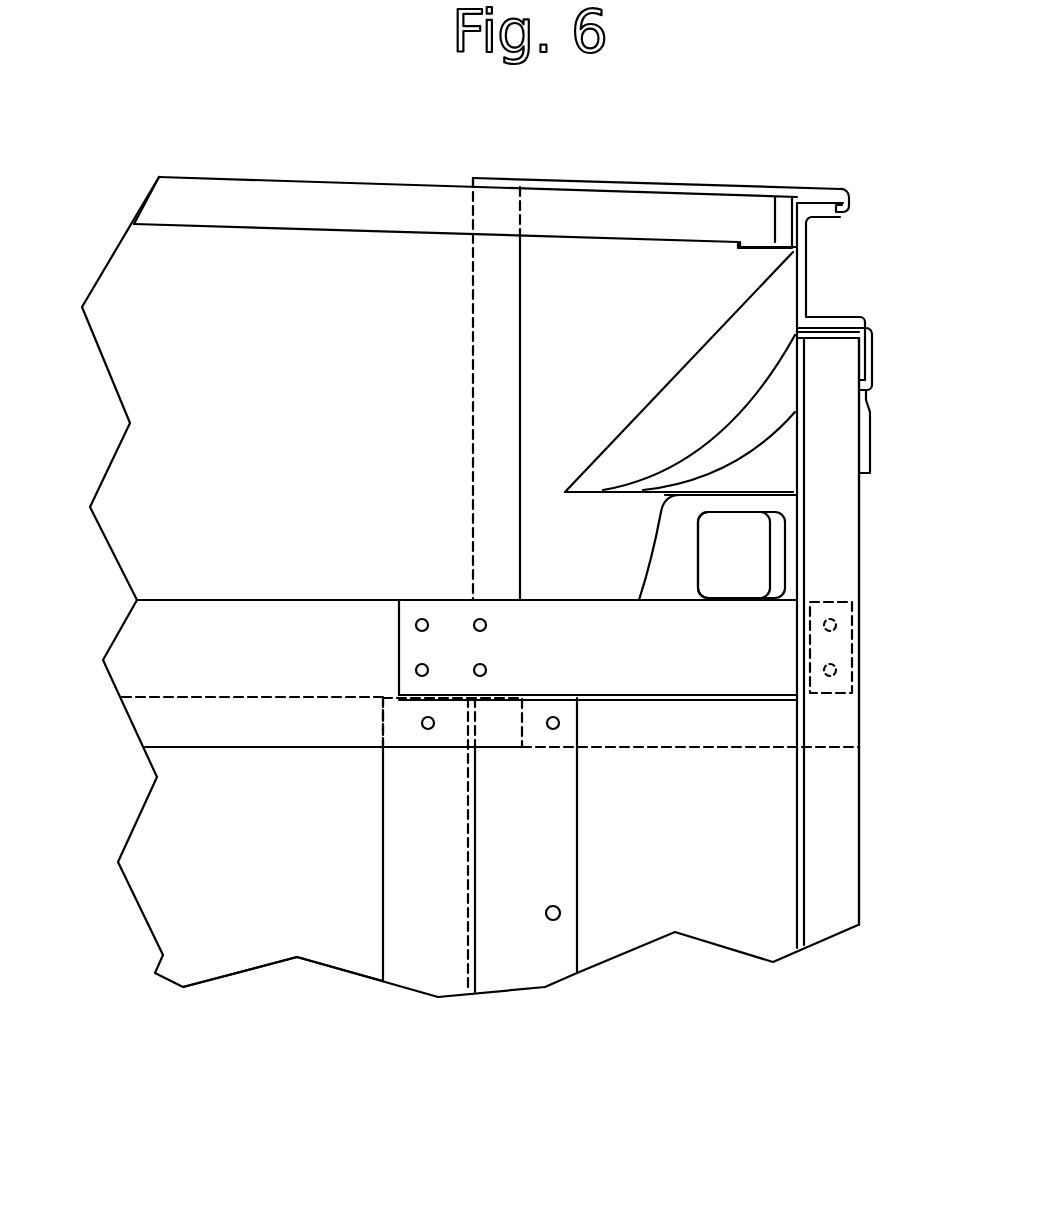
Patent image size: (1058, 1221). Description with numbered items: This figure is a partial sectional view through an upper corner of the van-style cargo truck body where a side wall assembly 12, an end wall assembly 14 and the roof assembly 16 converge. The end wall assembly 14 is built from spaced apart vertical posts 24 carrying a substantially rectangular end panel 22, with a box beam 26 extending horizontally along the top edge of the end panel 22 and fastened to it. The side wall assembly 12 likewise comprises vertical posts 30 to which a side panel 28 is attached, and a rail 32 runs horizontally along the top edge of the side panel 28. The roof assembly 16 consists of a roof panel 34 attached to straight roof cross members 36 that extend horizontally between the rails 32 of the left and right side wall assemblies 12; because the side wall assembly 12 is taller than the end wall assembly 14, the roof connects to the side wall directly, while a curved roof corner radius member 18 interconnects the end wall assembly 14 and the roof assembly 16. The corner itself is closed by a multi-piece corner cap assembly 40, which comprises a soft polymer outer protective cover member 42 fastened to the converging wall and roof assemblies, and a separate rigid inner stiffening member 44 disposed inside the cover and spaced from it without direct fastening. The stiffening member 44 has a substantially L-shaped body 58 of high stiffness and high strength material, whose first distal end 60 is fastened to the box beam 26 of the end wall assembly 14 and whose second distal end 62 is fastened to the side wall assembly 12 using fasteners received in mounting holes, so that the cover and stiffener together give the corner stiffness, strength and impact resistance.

The side wall assembly 12 is at (864, 866).
The end wall assembly 14 is at (150, 872).
The roof assembly 16 is at (228, 170).
The roof corner radius member 18 is at (132, 468).
The end panel 22 is at (277, 942).
The vertical post 24 is at (417, 962).
The box beam 26 is at (127, 654).
The side panel 28 is at (859, 777).
The vertical post 30 is at (838, 550).
The rail 32 is at (790, 302).
The roof panel 34 is at (423, 185).
The straight roof cross member 36 is at (322, 200).
The multi-piece corner cap assembly 40 is at (828, 283).
The protective cover member 42 is at (604, 168).
The stiffening member 44 is at (689, 714).
The L-shaped body 58 is at (582, 612).
The first distal end 60 is at (445, 612).
The second distal end 62 is at (850, 645).